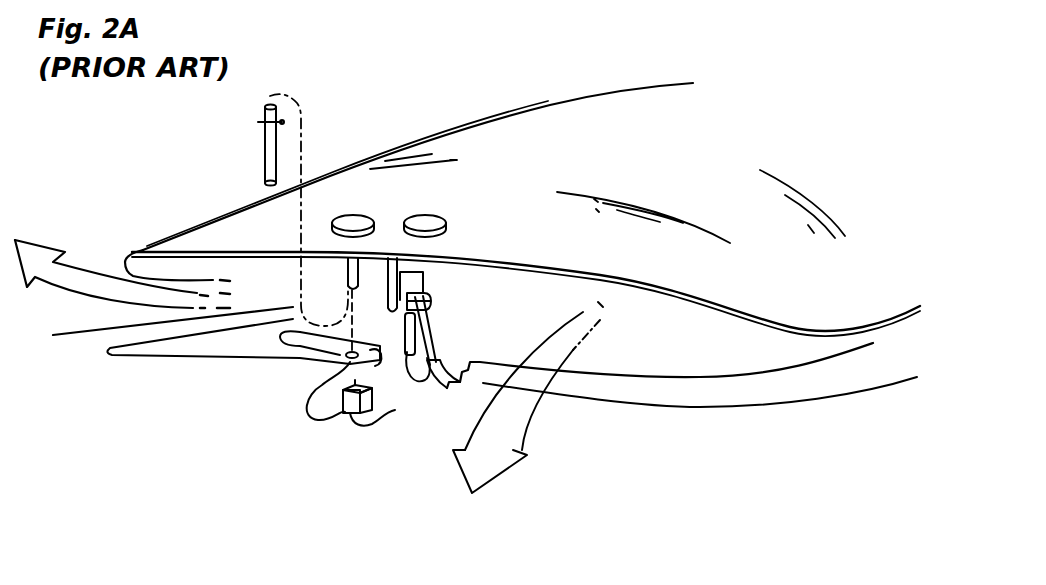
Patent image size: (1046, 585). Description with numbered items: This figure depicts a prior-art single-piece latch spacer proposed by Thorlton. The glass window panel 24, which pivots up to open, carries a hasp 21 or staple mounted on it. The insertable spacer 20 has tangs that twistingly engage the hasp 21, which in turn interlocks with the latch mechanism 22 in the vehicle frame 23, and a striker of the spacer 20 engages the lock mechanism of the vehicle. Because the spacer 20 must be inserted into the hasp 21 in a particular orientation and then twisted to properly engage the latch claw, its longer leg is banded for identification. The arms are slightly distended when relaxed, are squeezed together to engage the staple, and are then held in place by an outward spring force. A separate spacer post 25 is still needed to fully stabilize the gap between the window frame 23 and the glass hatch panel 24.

The insertable spacer 20 is at (405, 392).
The hasp 21 is at (395, 330).
The latch mechanism 22 is at (422, 395).
The vehicle frame 23 is at (589, 407).
The glass window panel 24 is at (502, 168).
The spacer post 25 is at (241, 150).